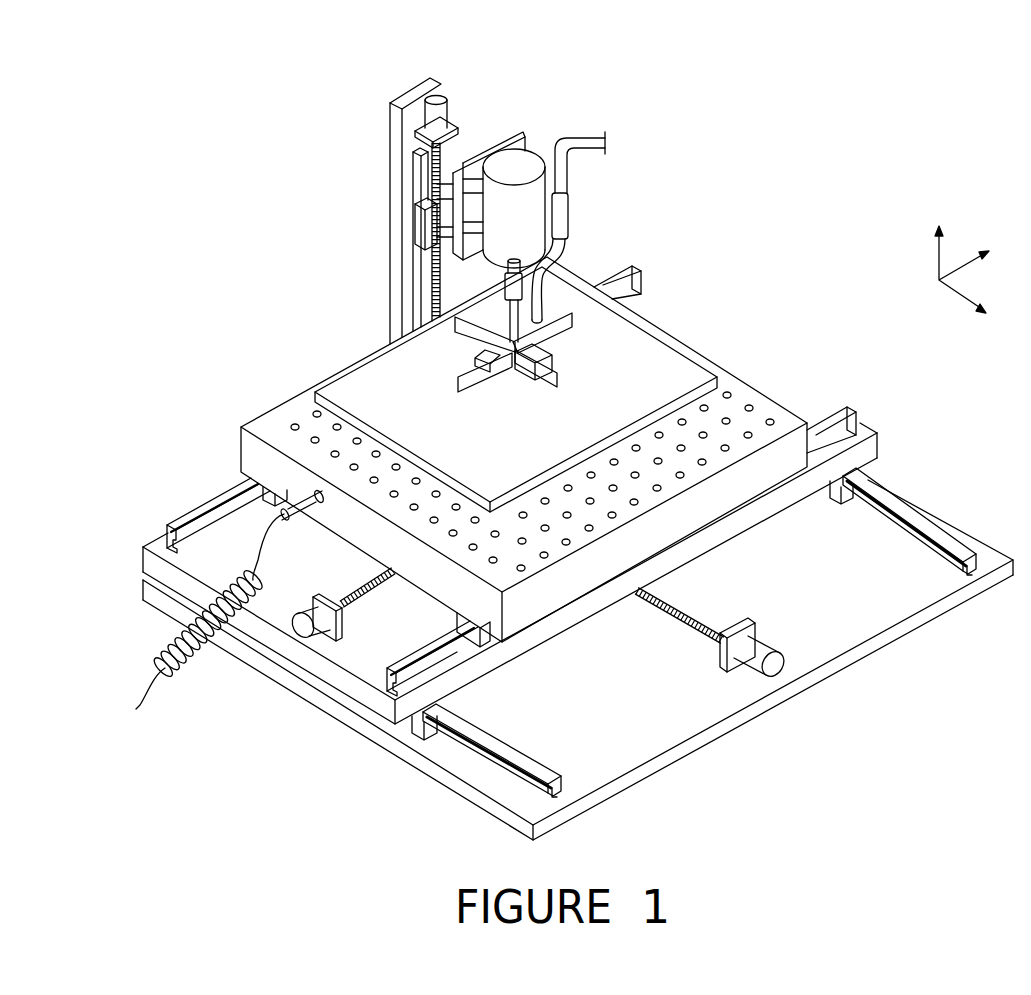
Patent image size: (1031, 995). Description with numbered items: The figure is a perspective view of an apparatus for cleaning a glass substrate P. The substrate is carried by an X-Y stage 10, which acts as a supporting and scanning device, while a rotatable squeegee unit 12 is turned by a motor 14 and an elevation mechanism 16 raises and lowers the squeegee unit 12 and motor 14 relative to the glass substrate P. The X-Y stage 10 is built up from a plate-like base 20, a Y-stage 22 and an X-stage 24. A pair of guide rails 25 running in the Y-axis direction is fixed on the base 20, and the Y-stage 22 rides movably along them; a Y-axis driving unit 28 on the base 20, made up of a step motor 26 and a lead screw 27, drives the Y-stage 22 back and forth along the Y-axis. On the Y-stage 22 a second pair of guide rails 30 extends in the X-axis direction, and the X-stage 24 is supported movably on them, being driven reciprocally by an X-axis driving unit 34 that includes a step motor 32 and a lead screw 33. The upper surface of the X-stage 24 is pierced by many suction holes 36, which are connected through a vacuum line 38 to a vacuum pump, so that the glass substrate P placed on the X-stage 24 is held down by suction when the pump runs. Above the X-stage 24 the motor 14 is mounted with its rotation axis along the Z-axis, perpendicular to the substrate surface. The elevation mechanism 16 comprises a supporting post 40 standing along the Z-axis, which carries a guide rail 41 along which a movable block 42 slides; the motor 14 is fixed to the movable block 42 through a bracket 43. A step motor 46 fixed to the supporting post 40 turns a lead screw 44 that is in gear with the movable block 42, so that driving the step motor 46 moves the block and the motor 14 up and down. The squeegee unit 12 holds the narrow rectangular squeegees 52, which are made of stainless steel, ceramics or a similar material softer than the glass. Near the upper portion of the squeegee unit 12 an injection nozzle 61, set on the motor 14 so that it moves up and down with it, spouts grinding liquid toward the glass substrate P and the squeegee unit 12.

The X-Y stage 10 is at (218, 455).
The squeegee unit 12 is at (469, 356).
The motor 14 is at (533, 160).
The elevation mechanism 16 is at (475, 131).
The base 20 is at (875, 620).
The Y-stage 22 is at (347, 664).
The X-stage 24 is at (558, 593).
The guide rails 25 is at (533, 760).
The step motor 26 is at (777, 667).
The lead screw 27 is at (700, 620).
The Y-axis driving unit 28 is at (722, 682).
The guide rails 30 is at (185, 522).
The step motor 32 is at (300, 628).
The lead screw 33 is at (352, 592).
The X-axis driving unit 34 is at (367, 601).
The suction holes 36 is at (299, 418).
The vacuum line 38 is at (173, 651).
The supporting post 40 is at (390, 121).
The guide rail 41 is at (413, 168).
The movable block 42 is at (415, 224).
The bracket 43 is at (500, 143).
The lead screw 44 is at (432, 290).
The step motor 46 is at (433, 93).
The squeegee 52 is at (465, 333).
The injection nozzle 61 is at (537, 300).
The glass substrate P is at (642, 340).